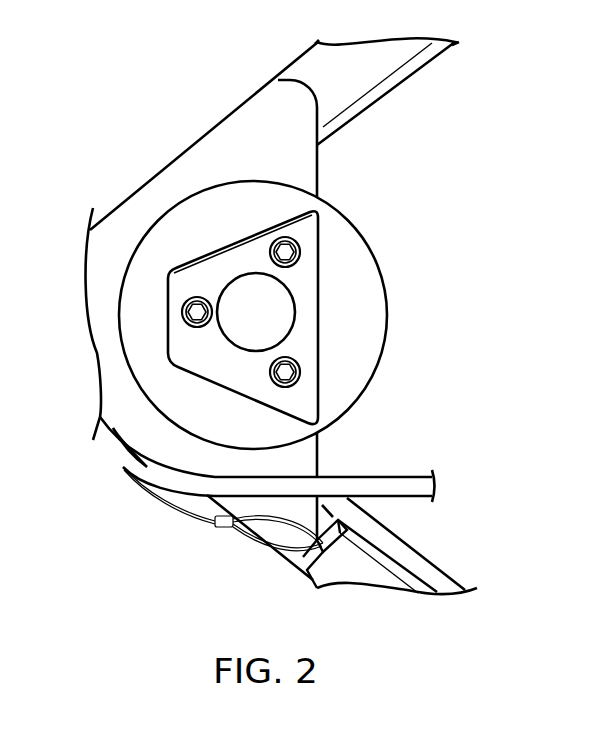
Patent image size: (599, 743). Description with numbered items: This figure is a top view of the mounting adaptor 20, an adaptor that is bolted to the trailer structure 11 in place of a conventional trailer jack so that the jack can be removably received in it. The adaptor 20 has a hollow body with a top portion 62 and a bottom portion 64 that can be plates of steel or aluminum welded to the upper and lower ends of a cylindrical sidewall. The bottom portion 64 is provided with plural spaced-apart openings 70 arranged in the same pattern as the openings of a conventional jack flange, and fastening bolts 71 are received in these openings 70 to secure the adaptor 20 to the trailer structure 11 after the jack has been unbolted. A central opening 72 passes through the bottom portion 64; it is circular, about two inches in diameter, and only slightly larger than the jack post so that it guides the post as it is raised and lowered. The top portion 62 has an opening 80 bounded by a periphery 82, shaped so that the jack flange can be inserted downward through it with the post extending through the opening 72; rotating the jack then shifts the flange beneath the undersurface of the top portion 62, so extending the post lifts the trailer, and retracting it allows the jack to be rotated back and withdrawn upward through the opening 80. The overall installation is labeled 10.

The mounting assembly 10 is at (160, 153).
The trailer structure 11 is at (212, 150).
The mounting adaptor 20 is at (369, 316).
The top portion 62 is at (373, 278).
The bottom portion 64 is at (303, 285).
The openings 70 is at (266, 246).
The fastening bolts 71 is at (299, 253).
The opening 72 is at (285, 312).
The opening 80 is at (280, 400).
The periphery 82 is at (305, 397).